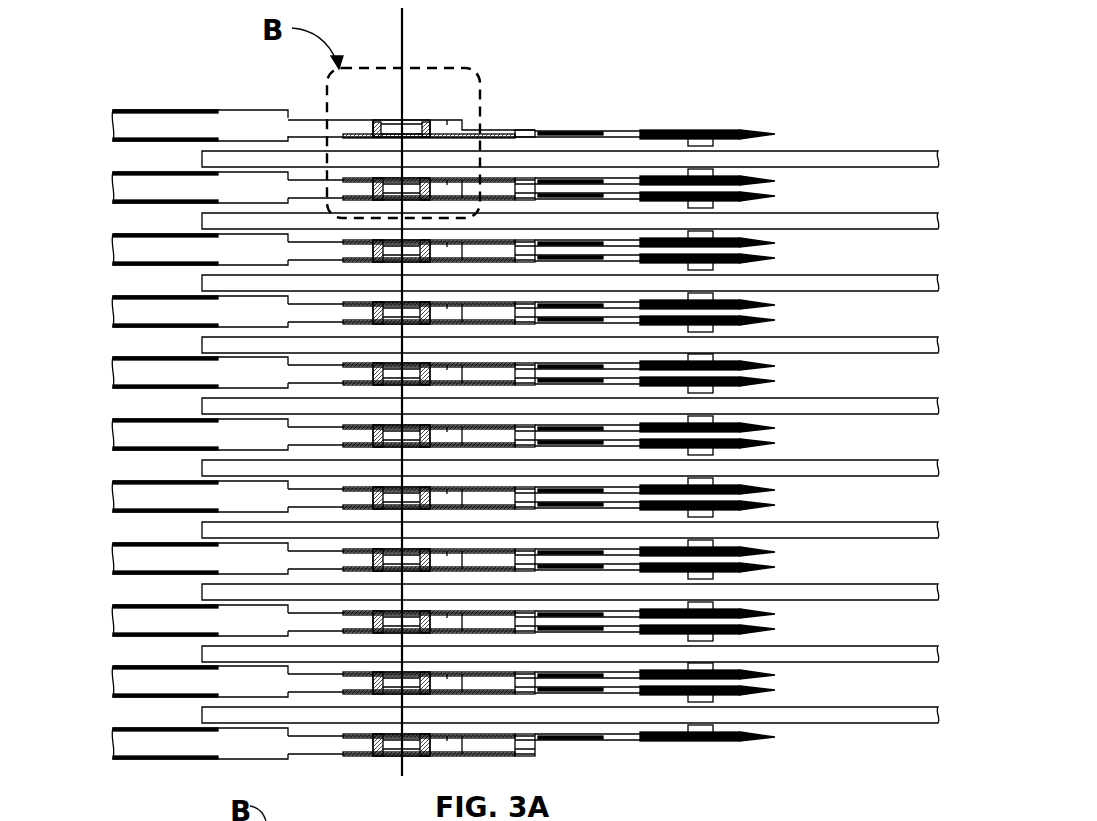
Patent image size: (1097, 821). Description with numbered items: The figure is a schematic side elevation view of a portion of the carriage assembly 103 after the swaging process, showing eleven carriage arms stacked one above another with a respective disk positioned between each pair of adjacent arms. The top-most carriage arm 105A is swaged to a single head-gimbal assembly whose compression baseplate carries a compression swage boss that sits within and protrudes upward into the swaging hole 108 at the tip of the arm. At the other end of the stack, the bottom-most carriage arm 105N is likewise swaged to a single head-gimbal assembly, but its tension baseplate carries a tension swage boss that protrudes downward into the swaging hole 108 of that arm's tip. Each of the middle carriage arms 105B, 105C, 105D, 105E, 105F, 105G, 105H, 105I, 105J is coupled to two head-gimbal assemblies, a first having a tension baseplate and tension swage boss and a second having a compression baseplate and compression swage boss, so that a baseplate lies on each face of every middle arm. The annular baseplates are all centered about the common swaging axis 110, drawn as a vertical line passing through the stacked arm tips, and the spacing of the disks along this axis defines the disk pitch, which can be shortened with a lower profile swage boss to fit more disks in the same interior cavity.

The carriage assembly 103 is at (148, 100).
The top-most carriage arm 105A is at (166, 119).
The middle carriage arm 105B is at (166, 172).
The middle carriage arm 105C is at (166, 234).
The middle carriage arm 105D is at (166, 296).
The middle carriage arm 105E is at (166, 357).
The middle carriage arm 105F is at (166, 419).
The middle carriage arm 105G is at (166, 481).
The middle carriage arm 105H is at (166, 543).
The middle carriage arm 105I is at (170, 605).
The middle carriage arm 105J is at (169, 666).
The bottom-most carriage arm 105N is at (166, 728).
The swaging hole 108 is at (434, 88).
The swaging axis 110 is at (404, 45).